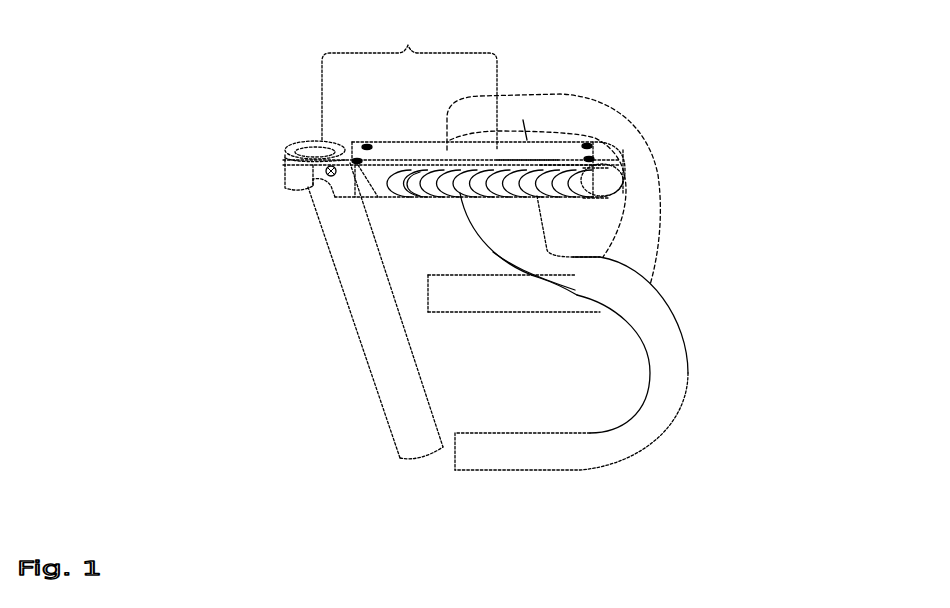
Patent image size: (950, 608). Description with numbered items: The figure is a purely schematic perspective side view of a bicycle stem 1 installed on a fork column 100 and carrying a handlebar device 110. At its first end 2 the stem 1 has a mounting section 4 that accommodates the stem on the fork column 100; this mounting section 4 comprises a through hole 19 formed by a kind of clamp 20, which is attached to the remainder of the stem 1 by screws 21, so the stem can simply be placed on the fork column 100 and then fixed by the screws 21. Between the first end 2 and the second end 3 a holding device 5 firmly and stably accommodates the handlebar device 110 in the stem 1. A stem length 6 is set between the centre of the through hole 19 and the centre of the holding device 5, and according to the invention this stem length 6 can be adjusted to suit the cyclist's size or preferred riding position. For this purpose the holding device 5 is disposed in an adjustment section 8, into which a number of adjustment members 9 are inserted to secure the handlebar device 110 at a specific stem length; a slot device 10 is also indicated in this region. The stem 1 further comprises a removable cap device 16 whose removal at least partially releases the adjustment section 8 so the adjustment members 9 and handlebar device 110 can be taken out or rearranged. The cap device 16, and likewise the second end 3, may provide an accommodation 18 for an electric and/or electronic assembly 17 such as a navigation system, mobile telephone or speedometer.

The stem 1 is at (103, 52).
The first end 2 is at (300, 70).
The second end 3 is at (616, 106).
The mounting section 4 is at (340, 130).
The holding device 5 is at (513, 150).
The stem length 6 is at (409, 82).
The adjustment section 8 is at (551, 152).
The adjustment member 9 is at (405, 188).
The slot device 10 is at (549, 190).
The cap device 16 is at (388, 147).
The assembly 17 is at (615, 186).
The accommodation 18 is at (610, 178).
The through hole 19 is at (300, 145).
The clamp 20 is at (288, 158).
The screws 21 is at (326, 171).
The fork column 100 is at (360, 335).
The handlebar device 110 is at (665, 373).